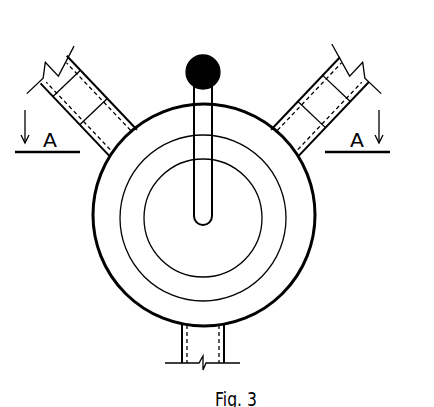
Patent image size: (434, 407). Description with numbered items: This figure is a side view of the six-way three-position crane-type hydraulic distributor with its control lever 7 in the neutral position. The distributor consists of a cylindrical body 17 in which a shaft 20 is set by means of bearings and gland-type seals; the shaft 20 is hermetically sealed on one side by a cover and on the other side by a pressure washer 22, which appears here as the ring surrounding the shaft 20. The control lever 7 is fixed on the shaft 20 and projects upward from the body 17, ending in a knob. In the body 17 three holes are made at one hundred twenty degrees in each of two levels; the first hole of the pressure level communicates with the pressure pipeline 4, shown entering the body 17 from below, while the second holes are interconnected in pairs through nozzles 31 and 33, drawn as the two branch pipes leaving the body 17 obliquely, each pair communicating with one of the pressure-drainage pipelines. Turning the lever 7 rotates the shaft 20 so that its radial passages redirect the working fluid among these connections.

The pressure pipeline 4 is at (190, 335).
The control lever 7 is at (191, 61).
The cylindrical body 17 is at (307, 227).
The shaft 20 is at (177, 227).
The pressure washer 22 is at (252, 266).
The nozzle 31 is at (78, 100).
The nozzle 33 is at (325, 99).